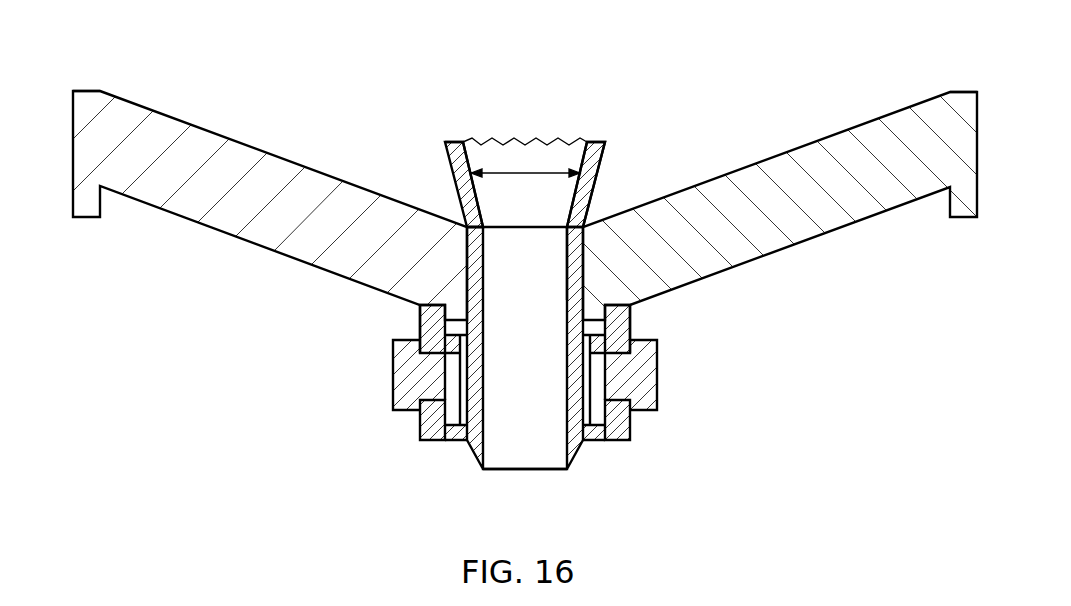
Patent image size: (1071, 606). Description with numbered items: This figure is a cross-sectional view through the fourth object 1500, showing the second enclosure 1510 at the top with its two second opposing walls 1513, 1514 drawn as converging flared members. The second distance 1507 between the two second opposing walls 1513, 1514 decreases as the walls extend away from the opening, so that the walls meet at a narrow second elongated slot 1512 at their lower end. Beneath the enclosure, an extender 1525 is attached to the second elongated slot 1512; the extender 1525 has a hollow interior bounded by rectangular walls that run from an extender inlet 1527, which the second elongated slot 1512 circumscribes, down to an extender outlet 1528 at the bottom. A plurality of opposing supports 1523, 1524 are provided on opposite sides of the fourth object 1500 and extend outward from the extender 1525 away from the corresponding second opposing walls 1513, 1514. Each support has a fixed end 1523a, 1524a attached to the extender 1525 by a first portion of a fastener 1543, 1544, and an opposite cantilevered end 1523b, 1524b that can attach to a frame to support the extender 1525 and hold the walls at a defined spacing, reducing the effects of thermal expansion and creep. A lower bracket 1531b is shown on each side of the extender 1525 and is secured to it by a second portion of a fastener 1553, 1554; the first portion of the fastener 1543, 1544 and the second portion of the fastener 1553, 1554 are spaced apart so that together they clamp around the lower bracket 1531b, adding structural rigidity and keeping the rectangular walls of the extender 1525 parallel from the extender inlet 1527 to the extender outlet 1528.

The fourth object 1500 is at (742, 112).
The second distance 1507 is at (523, 172).
The second enclosure 1510 is at (493, 160).
The second elongated slot 1512 is at (578, 242).
The second opposing wall 1513 is at (603, 154).
The second opposing wall 1514 is at (453, 157).
The opposing support 1523 is at (833, 228).
The fixed end 1523a is at (613, 272).
The cantilevered end 1523b is at (965, 100).
The opposing support 1524 is at (196, 221).
The fixed end 1524a is at (453, 274).
The cantilevered end 1524b is at (87, 122).
The extender 1525 is at (512, 433).
The extender inlet 1527 is at (492, 227).
The extender outlet 1528 is at (545, 470).
The lower bracket 1531b is at (398, 378).
The first portion of a fastener 1543 is at (622, 336).
The first portion of a fastener 1544 is at (425, 350).
The second portion of a fastener 1553 is at (613, 432).
The second portion of a fastener 1554 is at (423, 432).